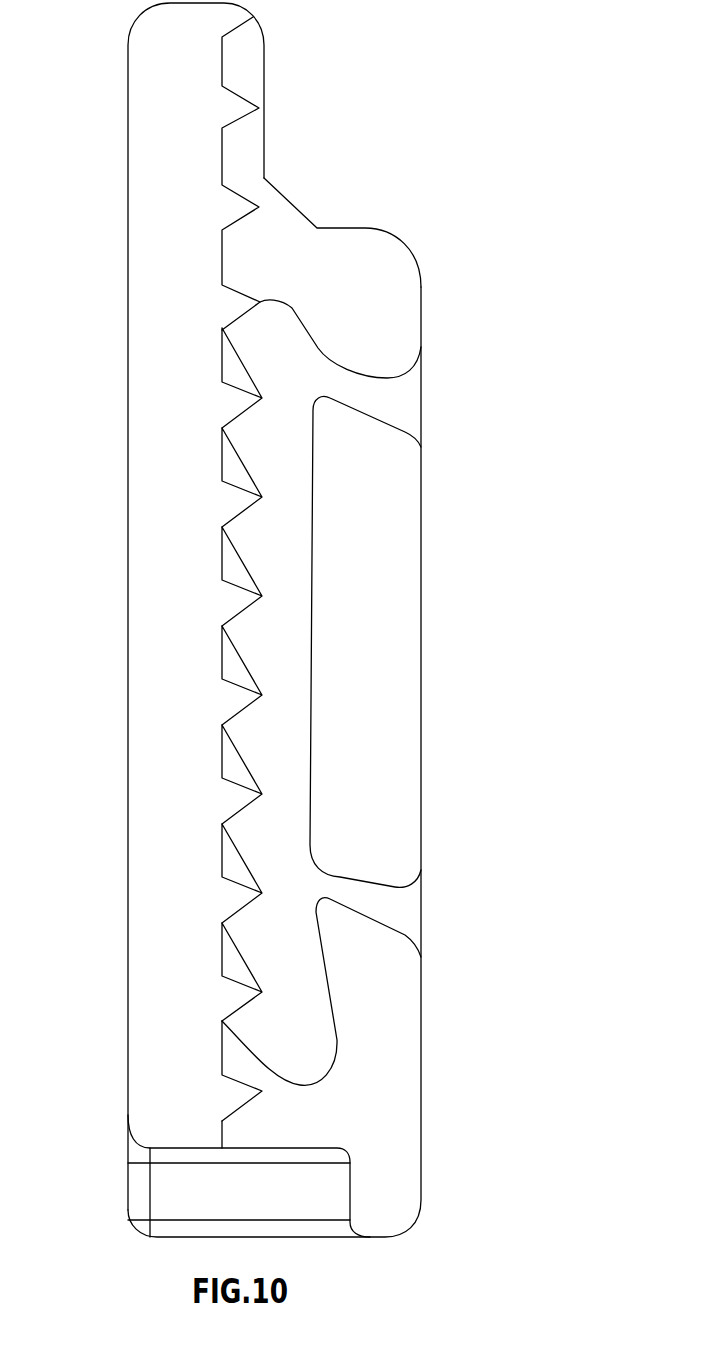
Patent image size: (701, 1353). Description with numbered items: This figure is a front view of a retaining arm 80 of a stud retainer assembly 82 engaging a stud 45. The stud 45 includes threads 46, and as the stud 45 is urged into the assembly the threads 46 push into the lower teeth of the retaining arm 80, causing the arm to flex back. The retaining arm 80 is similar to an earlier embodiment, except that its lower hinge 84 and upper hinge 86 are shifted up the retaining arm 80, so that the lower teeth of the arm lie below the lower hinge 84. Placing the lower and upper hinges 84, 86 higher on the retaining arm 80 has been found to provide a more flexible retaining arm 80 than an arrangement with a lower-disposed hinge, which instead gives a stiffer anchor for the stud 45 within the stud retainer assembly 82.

The stud 45 is at (152, 329).
The threads 46 is at (242, 195).
The stud retainer assembly 82 is at (412, 280).
The upper hinge 86 is at (393, 402).
The retaining arm 80 is at (293, 518).
The lower hinge 84 is at (397, 906).